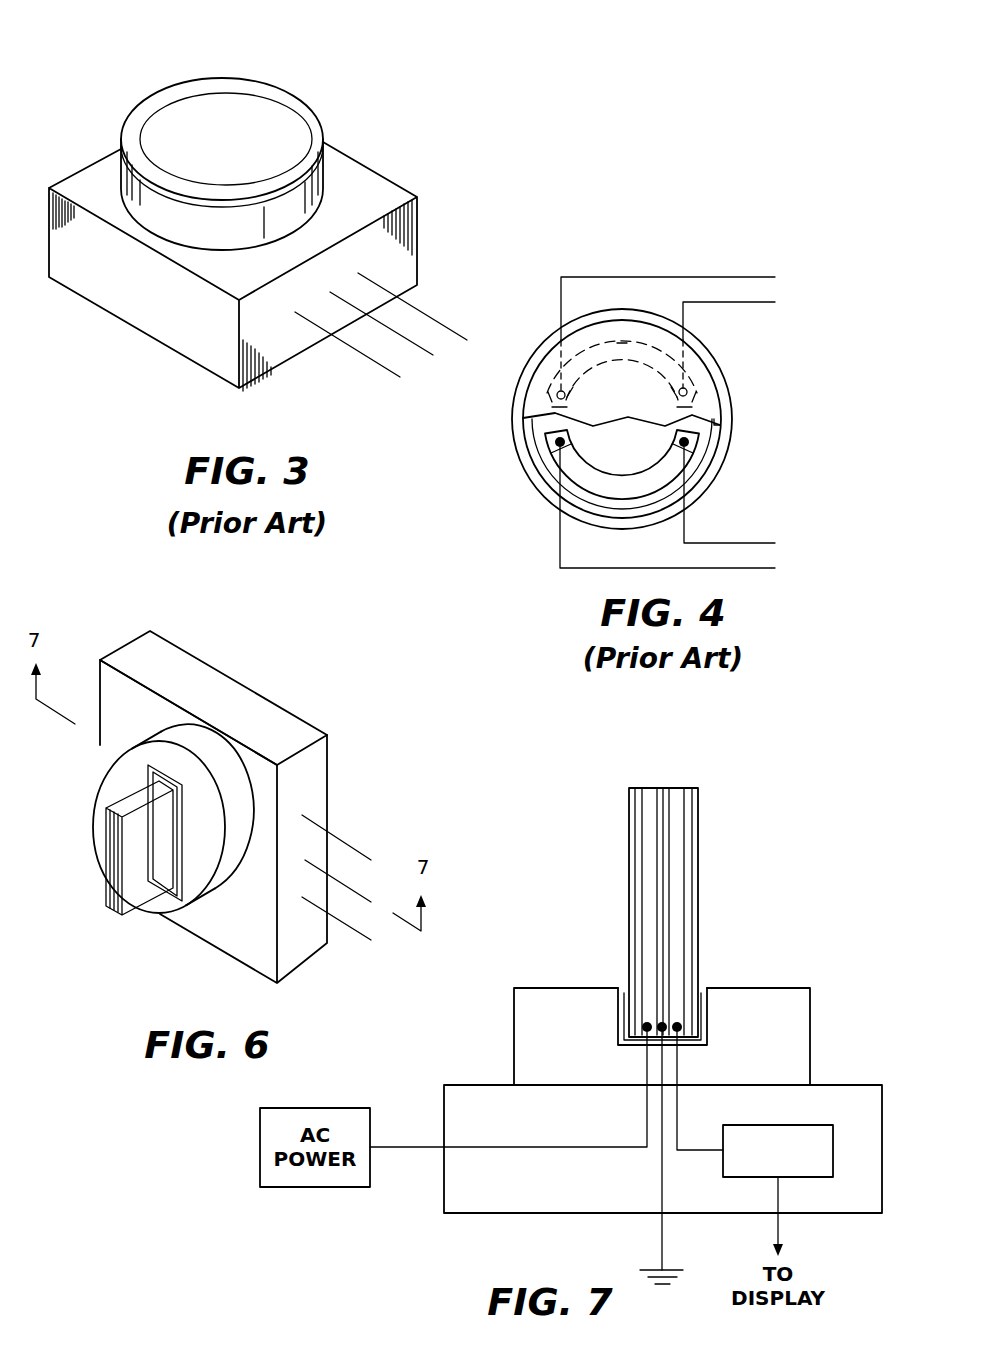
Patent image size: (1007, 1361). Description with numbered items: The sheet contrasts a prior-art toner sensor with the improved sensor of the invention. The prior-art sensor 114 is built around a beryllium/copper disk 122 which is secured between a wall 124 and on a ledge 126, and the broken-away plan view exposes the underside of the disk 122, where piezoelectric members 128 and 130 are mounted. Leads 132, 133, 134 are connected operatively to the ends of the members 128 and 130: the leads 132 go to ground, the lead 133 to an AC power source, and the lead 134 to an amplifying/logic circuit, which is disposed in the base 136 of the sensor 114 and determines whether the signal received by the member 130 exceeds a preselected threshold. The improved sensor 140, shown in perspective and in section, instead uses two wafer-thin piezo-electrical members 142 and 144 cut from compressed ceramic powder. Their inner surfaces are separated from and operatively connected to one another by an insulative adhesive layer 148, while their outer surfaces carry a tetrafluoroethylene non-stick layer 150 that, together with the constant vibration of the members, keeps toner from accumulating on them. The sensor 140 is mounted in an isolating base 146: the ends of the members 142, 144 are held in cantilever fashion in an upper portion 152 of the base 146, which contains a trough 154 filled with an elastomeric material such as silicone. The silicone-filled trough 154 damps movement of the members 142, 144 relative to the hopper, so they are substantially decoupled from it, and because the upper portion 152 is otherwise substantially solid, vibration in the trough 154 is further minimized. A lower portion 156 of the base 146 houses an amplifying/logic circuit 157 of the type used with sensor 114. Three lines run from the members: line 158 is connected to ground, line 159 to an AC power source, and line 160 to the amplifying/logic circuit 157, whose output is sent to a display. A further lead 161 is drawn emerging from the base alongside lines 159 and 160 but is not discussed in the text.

In FIG. 3, the sensor 114 is at (141, 343).
In FIG. 3, the beryllium/copper disk 122 is at (230, 117).
In FIG. 4, the beryllium/copper disk 122 is at (606, 409).
In FIG. 3, the wall 124 is at (323, 190).
In FIG. 4, the wall 124 is at (514, 442).
In FIG. 4, the ledge 126 is at (545, 476).
In FIG. 4, the piezoelectric member 128 is at (697, 448).
In FIG. 4, the piezoelectric member 130 is at (623, 340).
In FIG. 3, the leads 132 is at (413, 347).
In FIG. 4, the leads 132 is at (750, 303).
In FIG. 3, the lead 133 is at (355, 353).
In FIG. 4, the lead 133 is at (750, 570).
In FIG. 3, the lead 134 is at (442, 323).
In FIG. 4, the lead 134 is at (760, 277).
In FIG. 3, the base 136 is at (73, 304).
In FIG. 6, the sensor 140 is at (165, 801).
In FIG. 7, the sensor 140 is at (695, 883).
In FIG. 6, the piezo-electrical member 142 is at (106, 824).
In FIG. 7, the piezo-electrical member 142 is at (648, 790).
In FIG. 6, the piezo-electrical member 144 is at (116, 861).
In FIG. 7, the piezo-electrical member 144 is at (678, 790).
In FIG. 6, the base 146 is at (307, 717).
In FIG. 7, the base 146 is at (733, 965).
In FIG. 6, the adhesive layer 148 is at (109, 895).
In FIG. 7, the adhesive layer 148 is at (660, 790).
In FIG. 6, the non-stick layer 150 is at (150, 874).
In FIG. 7, the non-stick layer 150 is at (635, 875).
In FIG. 6, the upper portion 152 is at (179, 740).
In FIG. 7, the upper portion 152 is at (812, 1027).
In FIG. 6, the trough 154 is at (179, 863).
In FIG. 7, the trough 154 is at (697, 1045).
In FIG. 6, the lower portion 156 is at (311, 765).
In FIG. 7, the lower portion 156 is at (482, 1213).
In FIG. 7, the amplifying/logic circuit 157 is at (817, 1125).
In FIG. 7, the line 158 is at (660, 1187).
In FIG. 6, the line 159 is at (362, 895).
In FIG. 7, the line 159 is at (572, 1148).
In FIG. 6, the line 160 is at (348, 840).
In FIG. 7, the line 160 is at (695, 1152).
In FIG. 6, the lead wire 161 is at (350, 933).